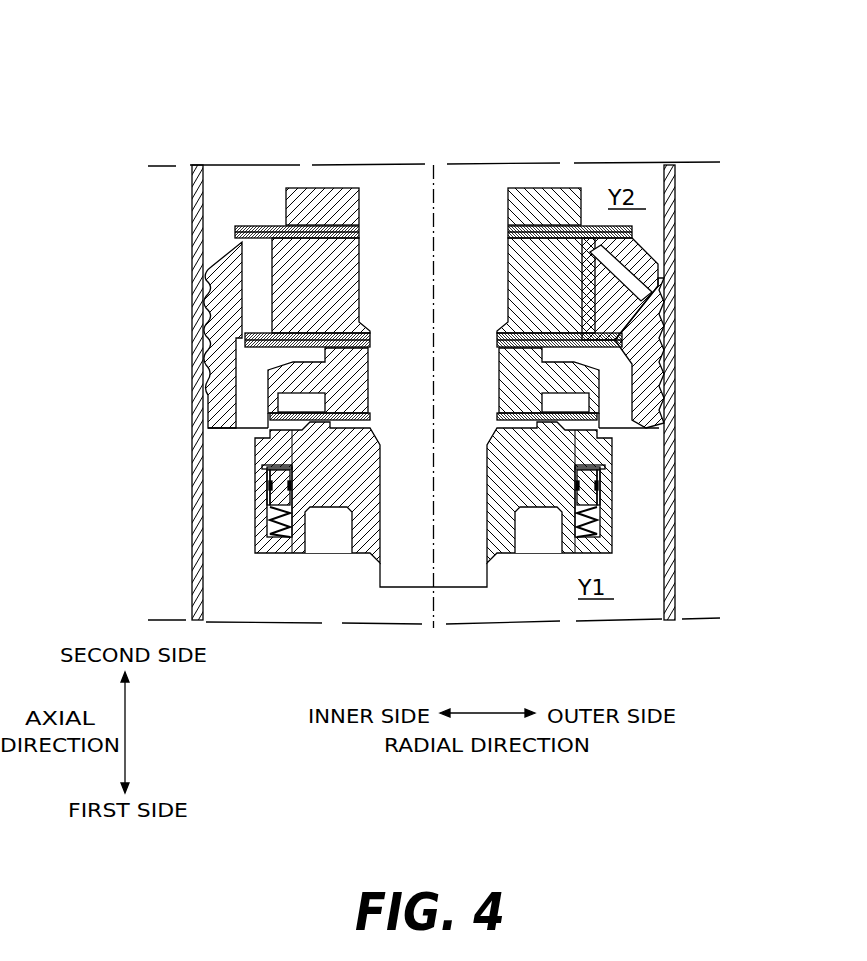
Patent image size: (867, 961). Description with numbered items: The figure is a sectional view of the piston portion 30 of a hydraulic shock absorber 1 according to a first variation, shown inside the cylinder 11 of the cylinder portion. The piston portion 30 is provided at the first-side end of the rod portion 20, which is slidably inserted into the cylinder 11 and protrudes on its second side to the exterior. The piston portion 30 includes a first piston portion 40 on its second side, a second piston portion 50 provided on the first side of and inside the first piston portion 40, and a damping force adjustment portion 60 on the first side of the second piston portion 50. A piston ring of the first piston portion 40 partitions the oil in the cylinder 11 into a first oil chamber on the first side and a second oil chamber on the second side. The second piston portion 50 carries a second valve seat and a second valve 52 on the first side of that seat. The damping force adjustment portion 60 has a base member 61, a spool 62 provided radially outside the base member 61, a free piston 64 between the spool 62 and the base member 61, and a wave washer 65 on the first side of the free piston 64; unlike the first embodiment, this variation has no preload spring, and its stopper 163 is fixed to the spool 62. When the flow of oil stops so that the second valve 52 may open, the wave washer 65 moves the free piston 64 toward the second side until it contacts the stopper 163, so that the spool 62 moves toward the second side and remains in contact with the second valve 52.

The hydraulic shock absorber 1 is at (146, 80).
The cylinder 11 is at (674, 232).
The rod portion 20 is at (406, 596).
The piston portion 30 is at (236, 183).
The first piston portion 40 is at (214, 248).
The second piston portion 50 is at (250, 388).
The second valve 52 is at (598, 417).
The damping force adjustment portion 60 is at (245, 547).
The base member 61 is at (545, 480).
The spool 62 is at (610, 478).
The free piston 64 is at (264, 500).
The wave washer 65 is at (598, 523).
The stopper 163 is at (262, 467).